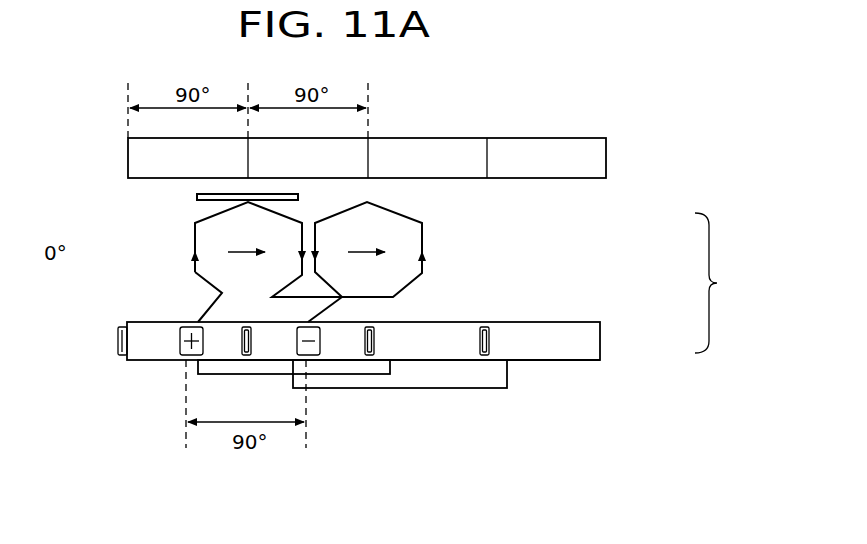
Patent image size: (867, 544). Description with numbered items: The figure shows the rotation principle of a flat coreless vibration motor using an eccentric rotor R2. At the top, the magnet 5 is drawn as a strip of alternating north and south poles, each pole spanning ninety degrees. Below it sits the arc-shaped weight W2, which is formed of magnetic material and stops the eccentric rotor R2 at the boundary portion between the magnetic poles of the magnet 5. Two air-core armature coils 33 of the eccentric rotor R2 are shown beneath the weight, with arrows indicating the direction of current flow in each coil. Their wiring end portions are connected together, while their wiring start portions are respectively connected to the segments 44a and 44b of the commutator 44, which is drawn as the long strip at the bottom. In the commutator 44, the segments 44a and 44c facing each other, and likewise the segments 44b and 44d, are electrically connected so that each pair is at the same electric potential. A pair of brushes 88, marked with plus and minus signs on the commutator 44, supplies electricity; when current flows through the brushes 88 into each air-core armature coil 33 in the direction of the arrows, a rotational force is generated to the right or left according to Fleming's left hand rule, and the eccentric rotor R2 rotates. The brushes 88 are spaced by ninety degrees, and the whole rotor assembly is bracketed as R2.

The magnet 5 is at (606, 157).
The arc-shaped weight W2 is at (197, 197).
The air-core armature coil 33 is at (202, 233).
The commutator 44 is at (606, 338).
The segment 44a is at (133, 350).
The segment 44b is at (275, 350).
The segment 44c is at (427, 350).
The segment 44d is at (553, 350).
The brush 88 is at (178, 355).
The eccentric rotor R2 is at (726, 283).